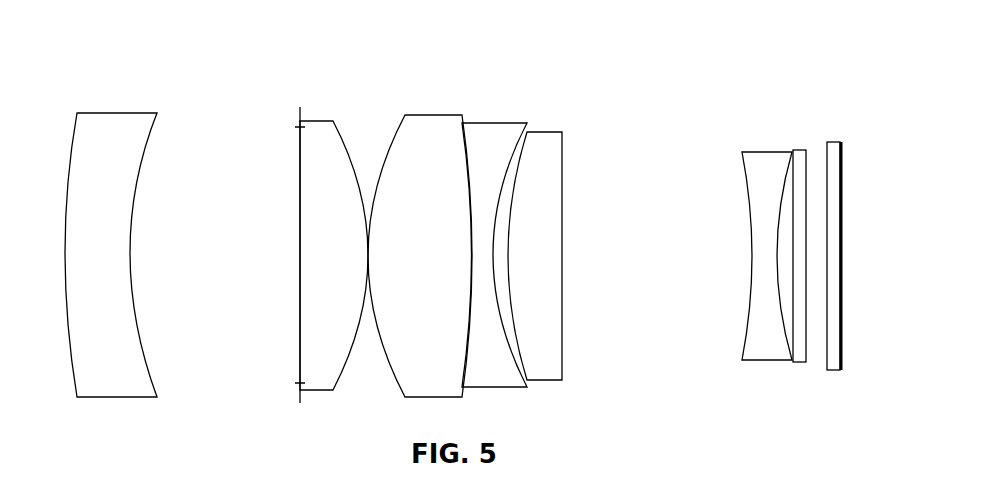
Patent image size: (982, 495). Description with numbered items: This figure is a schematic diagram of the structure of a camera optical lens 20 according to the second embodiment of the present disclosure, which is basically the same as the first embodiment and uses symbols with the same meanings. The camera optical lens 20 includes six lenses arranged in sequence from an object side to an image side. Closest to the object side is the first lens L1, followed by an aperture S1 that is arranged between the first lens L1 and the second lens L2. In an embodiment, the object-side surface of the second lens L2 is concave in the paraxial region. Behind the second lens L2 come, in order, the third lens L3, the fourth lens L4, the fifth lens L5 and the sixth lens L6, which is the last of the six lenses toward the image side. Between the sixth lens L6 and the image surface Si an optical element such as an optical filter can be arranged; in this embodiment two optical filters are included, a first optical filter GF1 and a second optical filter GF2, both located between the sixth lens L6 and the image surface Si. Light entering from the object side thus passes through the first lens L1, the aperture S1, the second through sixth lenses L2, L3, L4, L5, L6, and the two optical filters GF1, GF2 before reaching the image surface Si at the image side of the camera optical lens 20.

The camera optical lens 20 is at (470, 38).
The first lens L1 is at (111, 241).
The aperture S1 is at (281, 253).
The second lens L2 is at (334, 242).
The third lens L3 is at (420, 242).
The fourth lens L4 is at (494, 244).
The fifth lens L5 is at (535, 241).
The sixth lens L6 is at (767, 241).
The first optical filter GF1 is at (803, 242).
The second optical filter GF2 is at (845, 244).
The image surface Si is at (858, 256).